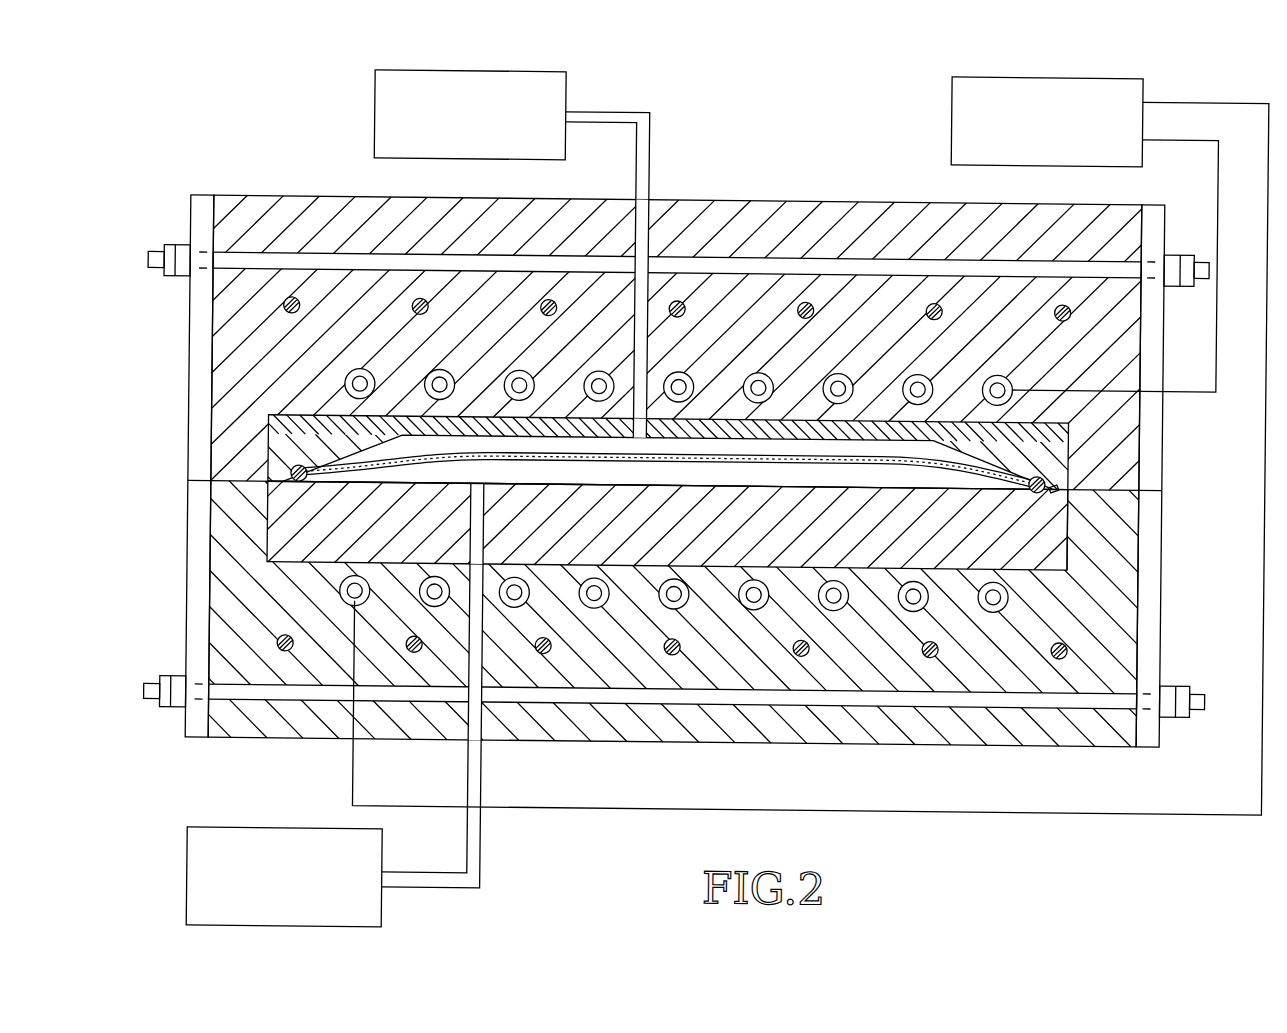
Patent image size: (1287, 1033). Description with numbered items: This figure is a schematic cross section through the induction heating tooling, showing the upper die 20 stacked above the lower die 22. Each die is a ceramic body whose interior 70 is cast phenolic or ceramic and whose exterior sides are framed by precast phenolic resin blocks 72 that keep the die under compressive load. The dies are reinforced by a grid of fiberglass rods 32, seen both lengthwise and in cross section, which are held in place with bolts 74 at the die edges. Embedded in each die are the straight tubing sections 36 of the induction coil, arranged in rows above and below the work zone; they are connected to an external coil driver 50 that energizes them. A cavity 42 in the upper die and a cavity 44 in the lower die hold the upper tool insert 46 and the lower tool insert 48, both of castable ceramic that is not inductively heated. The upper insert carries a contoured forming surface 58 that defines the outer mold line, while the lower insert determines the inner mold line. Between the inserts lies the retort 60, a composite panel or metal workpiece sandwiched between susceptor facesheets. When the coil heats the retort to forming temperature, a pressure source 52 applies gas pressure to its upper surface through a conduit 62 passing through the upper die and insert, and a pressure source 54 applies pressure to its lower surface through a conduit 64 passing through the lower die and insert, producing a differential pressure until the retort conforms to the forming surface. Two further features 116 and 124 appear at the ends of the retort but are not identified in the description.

The upper die 20 is at (692, 494).
The lower die 22 is at (1038, 782).
The fiberglass rods 32 is at (263, 258).
The straight tubing section 36 is at (359, 372).
The cavity 42 is at (1150, 390).
The cavity 44 is at (1070, 520).
The upper tool insert 46 is at (300, 428).
The lower tool insert 48 is at (295, 540).
The coil driver 50 is at (948, 118).
The pressure source 52 is at (371, 114).
The pressure source 54 is at (191, 886).
The contoured forming surface 58 is at (1010, 458).
The retort 60 is at (1000, 495).
The conduit 62 is at (648, 202).
The conduit 64 is at (486, 848).
The interior of the dies 70 is at (674, 509).
The phenolic reinforcement 72 is at (205, 355).
The bolts 74 is at (170, 282).
The diaphragm clamp 116 is at (1057, 487).
The diaphragm clamp 124 is at (293, 478).